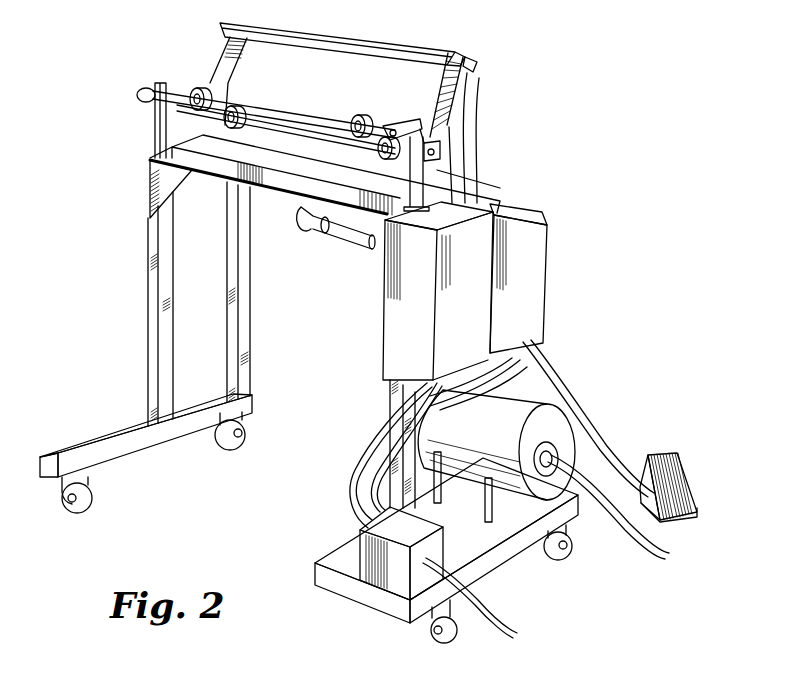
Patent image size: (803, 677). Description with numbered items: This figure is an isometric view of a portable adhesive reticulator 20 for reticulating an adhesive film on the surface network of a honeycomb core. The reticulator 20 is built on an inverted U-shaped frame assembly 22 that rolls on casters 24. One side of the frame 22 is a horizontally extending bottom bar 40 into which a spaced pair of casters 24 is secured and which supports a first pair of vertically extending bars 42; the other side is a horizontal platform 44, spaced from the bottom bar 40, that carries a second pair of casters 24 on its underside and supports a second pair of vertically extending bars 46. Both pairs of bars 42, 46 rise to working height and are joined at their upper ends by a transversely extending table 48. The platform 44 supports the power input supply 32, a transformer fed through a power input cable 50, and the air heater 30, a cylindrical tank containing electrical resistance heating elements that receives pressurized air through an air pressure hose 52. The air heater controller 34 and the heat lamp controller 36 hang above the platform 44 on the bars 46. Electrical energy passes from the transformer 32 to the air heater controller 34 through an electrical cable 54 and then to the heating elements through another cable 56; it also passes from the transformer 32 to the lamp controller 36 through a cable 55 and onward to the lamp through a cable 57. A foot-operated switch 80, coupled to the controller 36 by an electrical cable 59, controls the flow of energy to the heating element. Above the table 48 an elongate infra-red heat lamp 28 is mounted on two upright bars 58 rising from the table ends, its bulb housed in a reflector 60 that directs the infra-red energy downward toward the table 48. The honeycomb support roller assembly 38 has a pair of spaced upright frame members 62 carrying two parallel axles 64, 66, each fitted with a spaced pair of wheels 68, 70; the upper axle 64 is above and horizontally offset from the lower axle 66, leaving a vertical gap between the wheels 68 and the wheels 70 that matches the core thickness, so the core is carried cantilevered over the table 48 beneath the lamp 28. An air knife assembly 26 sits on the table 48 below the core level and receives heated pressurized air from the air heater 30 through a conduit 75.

The portable adhesive reticulator 20 is at (552, 200).
The frame assembly 22 is at (257, 355).
The casters 24 is at (93, 495).
The air knife assembly 26 is at (402, 167).
The infra-red heat lamp 28 is at (364, 46).
The air heater 30 is at (530, 408).
The power input supply 32 is at (378, 562).
The air heater controller 34 is at (392, 328).
The heat lamp controller 36 is at (540, 246).
The honeycomb support roller assembly 38 is at (178, 90).
The bottom bar 40 is at (110, 438).
The first pair of vertically extending bars 42 is at (236, 324).
The horizontal platform 44 is at (500, 557).
The second pair of vertically extending bars 46 is at (387, 477).
The table 48 is at (283, 197).
The power input cable 50 is at (497, 623).
The air pressure hose 52 is at (668, 557).
The electrical cable 54 is at (357, 463).
The electrical cable 55 is at (360, 500).
The electrical cable 56 is at (487, 487).
The electrical cable 57 is at (479, 107).
The upright bars 58 is at (226, 46).
The electrical cable 59 is at (597, 430).
The reflector 60 is at (288, 31).
The upright frame members 62 is at (162, 133).
The first axle 64 is at (263, 103).
The second axle 66 is at (290, 127).
The wheels 68 is at (197, 86).
The wheels 70 is at (378, 148).
The conduit 75 is at (353, 235).
The foot-operated switch 80 is at (693, 483).